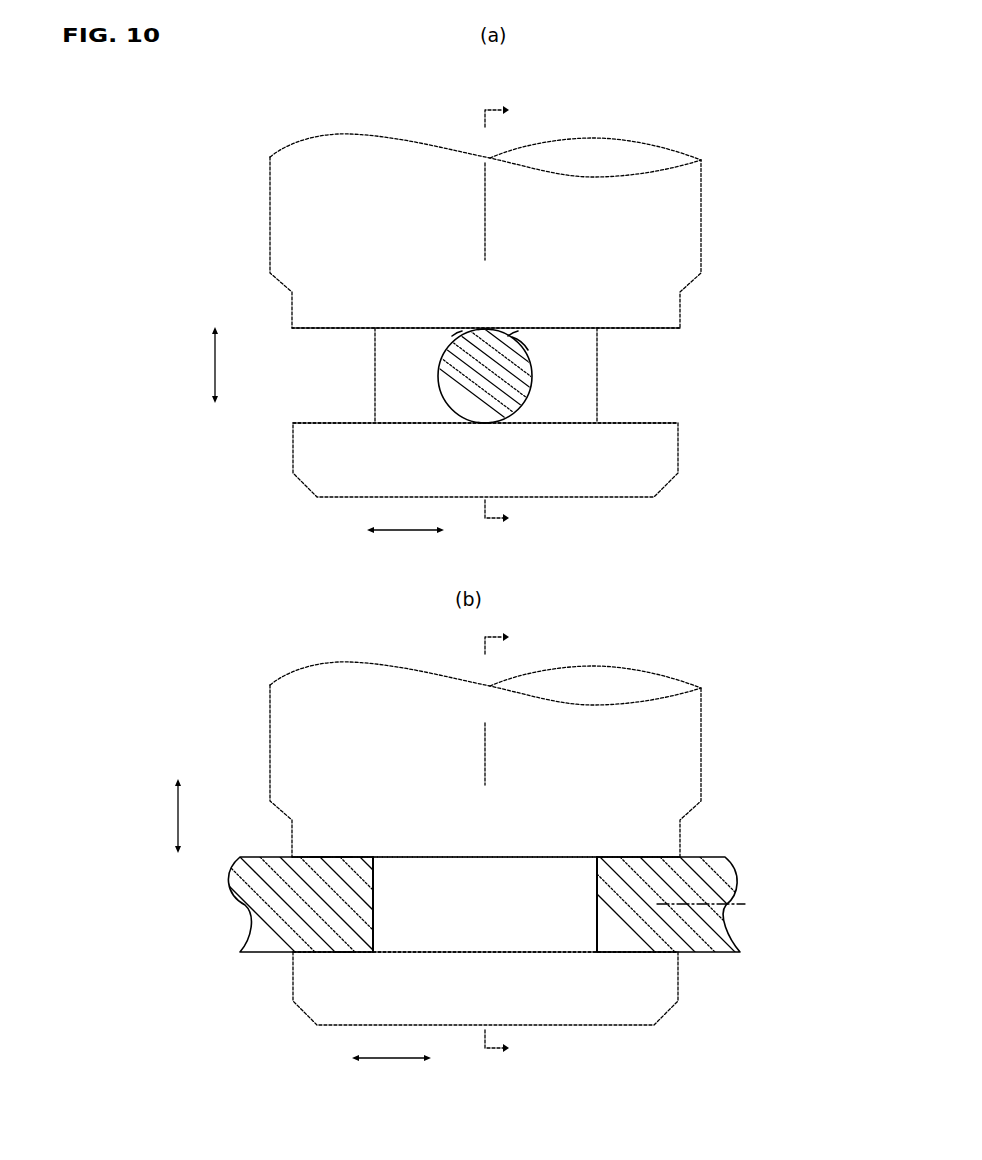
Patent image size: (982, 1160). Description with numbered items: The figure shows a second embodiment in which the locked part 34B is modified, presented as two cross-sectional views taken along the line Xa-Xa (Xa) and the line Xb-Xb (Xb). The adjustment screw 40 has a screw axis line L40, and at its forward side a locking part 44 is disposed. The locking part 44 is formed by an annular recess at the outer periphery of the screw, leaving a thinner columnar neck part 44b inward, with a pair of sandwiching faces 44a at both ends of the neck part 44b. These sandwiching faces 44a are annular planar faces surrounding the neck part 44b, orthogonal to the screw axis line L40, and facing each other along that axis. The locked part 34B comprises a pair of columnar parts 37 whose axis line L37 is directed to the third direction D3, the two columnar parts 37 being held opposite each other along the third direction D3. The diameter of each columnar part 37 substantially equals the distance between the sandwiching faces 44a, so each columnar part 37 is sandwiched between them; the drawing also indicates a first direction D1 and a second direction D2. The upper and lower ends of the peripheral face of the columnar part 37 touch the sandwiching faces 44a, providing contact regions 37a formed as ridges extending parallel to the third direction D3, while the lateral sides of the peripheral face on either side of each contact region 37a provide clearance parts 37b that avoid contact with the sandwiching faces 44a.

The adjustment screw 40 is at (703, 186).
The locking part 44 is at (690, 328).
The sandwiching faces 44a is at (300, 328).
The neck part 44b is at (600, 328).
The columnar part 37 is at (440, 368).
The contact regions 37a is at (480, 329).
The clearance parts 37b is at (458, 333).
The locked part 34B is at (519, 336).
The screw axis line L40 is at (490, 228).
The axis line of the columnar part L37 is at (745, 906).
The first direction D1 is at (229, 365).
The second direction D2 is at (405, 519).
The third direction D3 is at (391, 1047).
The line Xa- Xa is at (511, 843).
The line Xb- Xb is at (511, 314).